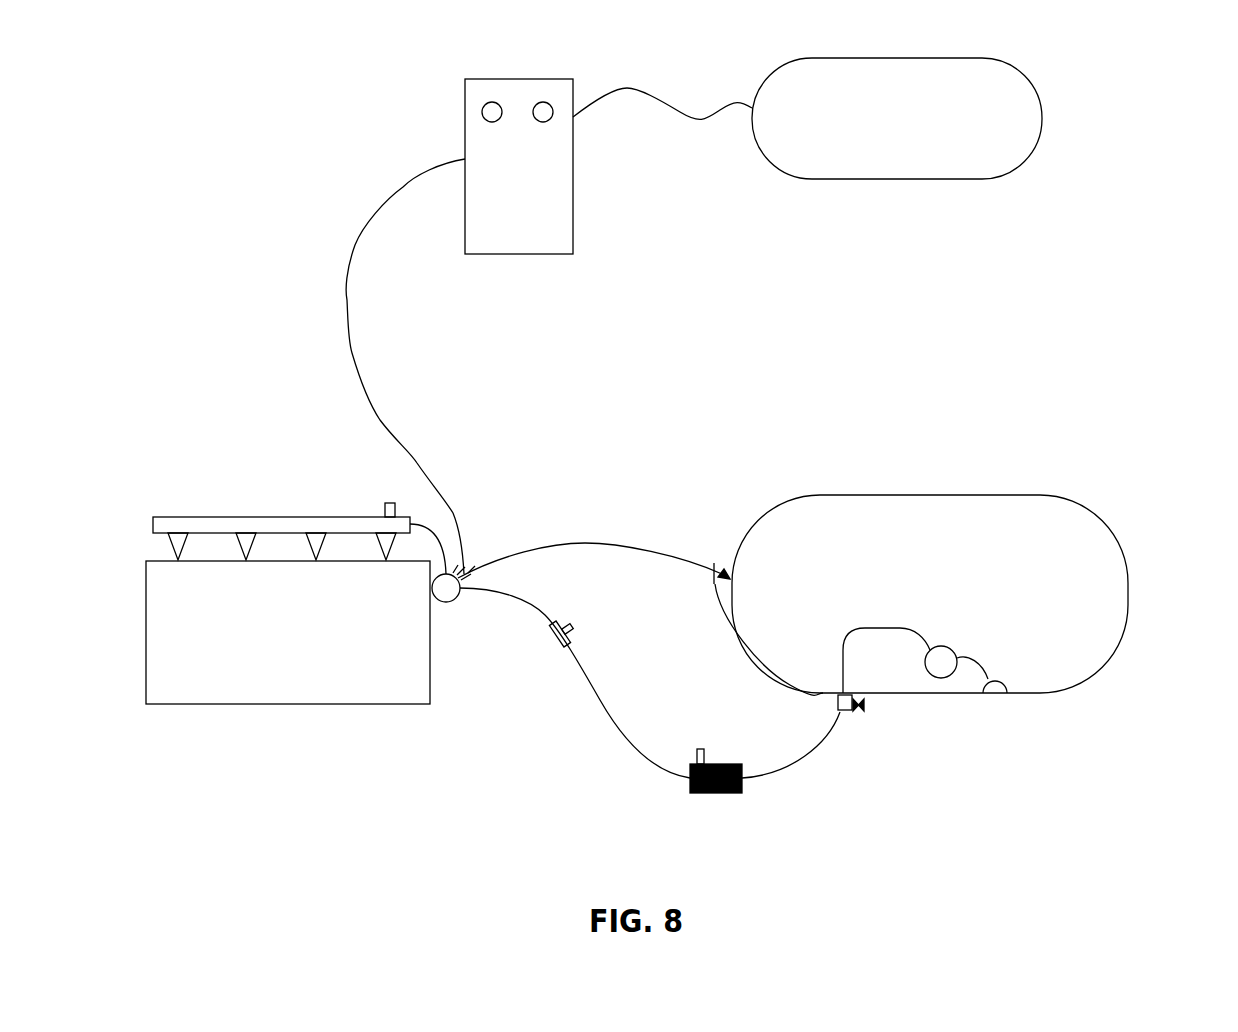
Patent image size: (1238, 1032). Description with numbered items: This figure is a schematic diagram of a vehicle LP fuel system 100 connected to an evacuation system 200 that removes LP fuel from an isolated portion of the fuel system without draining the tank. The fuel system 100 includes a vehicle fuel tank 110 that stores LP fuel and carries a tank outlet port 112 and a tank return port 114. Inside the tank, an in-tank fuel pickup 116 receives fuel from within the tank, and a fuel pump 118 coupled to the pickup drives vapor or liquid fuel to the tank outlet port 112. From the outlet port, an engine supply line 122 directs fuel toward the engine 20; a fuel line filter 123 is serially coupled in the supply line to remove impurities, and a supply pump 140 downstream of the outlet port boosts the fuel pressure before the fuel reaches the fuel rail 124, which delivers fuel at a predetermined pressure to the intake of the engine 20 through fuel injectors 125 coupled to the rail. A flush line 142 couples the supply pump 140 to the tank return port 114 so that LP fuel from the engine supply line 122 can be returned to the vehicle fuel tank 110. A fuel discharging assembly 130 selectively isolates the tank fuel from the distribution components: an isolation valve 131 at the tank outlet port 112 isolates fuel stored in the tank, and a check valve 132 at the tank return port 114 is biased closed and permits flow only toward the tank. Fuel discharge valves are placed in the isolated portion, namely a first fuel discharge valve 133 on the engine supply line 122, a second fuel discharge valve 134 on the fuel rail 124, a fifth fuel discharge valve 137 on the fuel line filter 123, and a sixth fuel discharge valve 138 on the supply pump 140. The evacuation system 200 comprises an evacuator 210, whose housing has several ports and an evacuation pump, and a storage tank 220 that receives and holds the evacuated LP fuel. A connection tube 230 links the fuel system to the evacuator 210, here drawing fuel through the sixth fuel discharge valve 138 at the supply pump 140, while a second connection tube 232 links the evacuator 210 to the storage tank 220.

The engine 20 is at (280, 704).
The fuel system 100 is at (1083, 473).
The vehicle fuel tank 110 is at (1128, 590).
The tank outlet port 112 is at (836, 706).
The tank return port 114 is at (736, 568).
The in-tank fuel pickup 116 is at (1003, 677).
The fuel pump 118 is at (949, 646).
The engine supply line 122 is at (586, 705).
The fuel line filter 123 is at (716, 794).
The fuel rail 124 is at (265, 517).
The fuel injectors 125 is at (166, 535).
The fuel discharging assembly 130 is at (835, 795).
The isolation valve 131 is at (865, 705).
The check valve 132 is at (718, 588).
The first fuel discharge valve 133 is at (557, 647).
The second fuel discharge valve 134 is at (389, 503).
The fifth fuel discharge valve 137 is at (700, 749).
The sixth fuel discharge valve 138 is at (474, 568).
The supply pump 140 is at (450, 596).
The flush line 142 is at (570, 543).
The evacuation system 200 is at (1133, 73).
The evacuator 210 is at (511, 79).
The storage tank 220 is at (1042, 104).
The connection tube 230 is at (349, 287).
The connection tube 232 is at (658, 99).